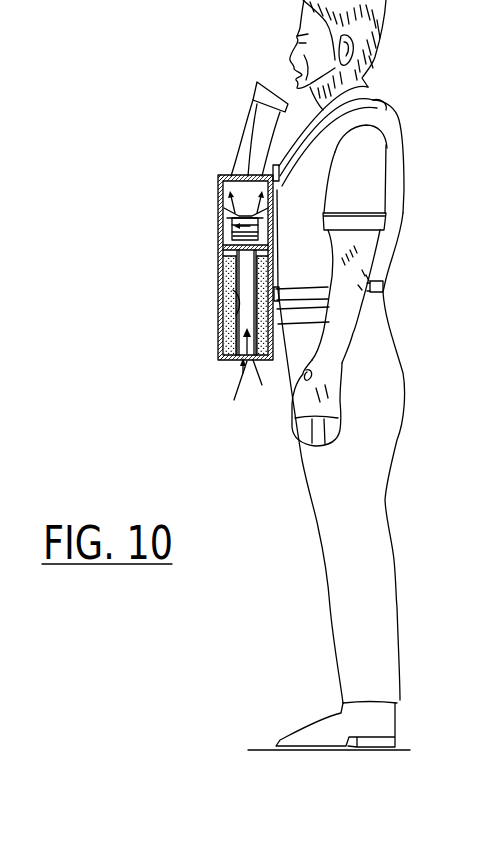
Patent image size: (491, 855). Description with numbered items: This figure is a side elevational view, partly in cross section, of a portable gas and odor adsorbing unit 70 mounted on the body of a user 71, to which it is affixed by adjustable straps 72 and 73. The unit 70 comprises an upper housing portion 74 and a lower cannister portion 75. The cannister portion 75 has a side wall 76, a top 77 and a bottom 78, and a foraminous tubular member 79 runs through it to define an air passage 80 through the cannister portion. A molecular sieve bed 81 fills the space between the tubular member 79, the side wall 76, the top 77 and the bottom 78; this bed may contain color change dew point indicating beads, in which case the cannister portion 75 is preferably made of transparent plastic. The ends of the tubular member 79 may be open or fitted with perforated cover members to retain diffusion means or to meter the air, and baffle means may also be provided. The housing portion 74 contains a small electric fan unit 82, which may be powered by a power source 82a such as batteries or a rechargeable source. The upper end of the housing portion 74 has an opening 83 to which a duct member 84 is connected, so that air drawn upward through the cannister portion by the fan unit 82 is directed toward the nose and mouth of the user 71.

The gas and odor adsorbing unit 70 is at (211, 272).
The user 71 is at (404, 159).
The adjustable strap 72 is at (386, 108).
The adjustable strap 73 is at (385, 286).
The upper housing portion 74 is at (218, 190).
The lower cannister portion 75 is at (236, 331).
The side wall 76 is at (231, 302).
The top 77 is at (226, 257).
The bottom 78 is at (231, 361).
The foraminous tubular member 79 is at (236, 314).
The air passage 80 is at (243, 320).
The molecular sieve bed 81 is at (219, 281).
The electric fan unit 82 is at (238, 223).
The power source 82a is at (245, 234).
The opening 83 is at (240, 168).
The duct member 84 is at (252, 108).